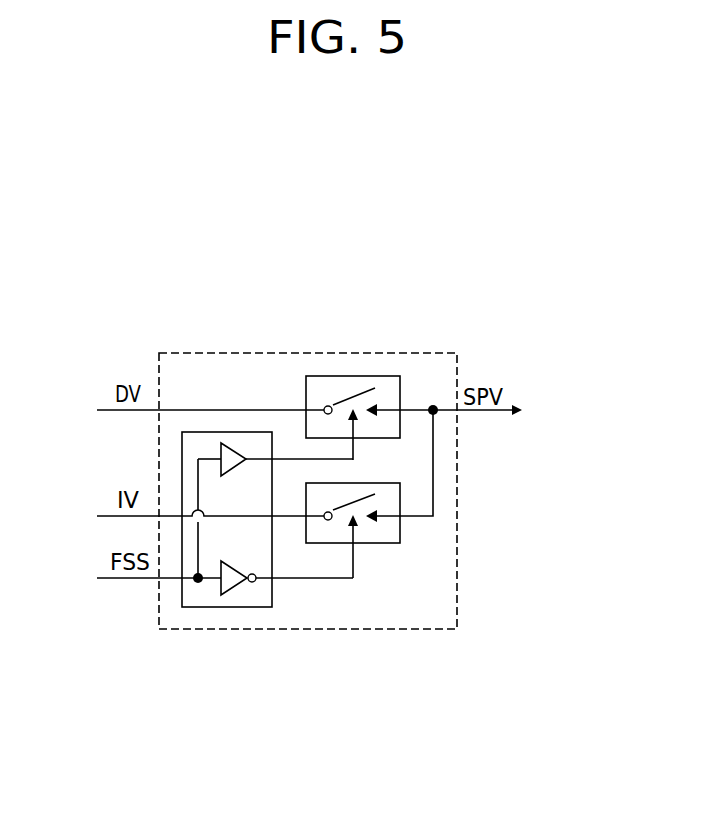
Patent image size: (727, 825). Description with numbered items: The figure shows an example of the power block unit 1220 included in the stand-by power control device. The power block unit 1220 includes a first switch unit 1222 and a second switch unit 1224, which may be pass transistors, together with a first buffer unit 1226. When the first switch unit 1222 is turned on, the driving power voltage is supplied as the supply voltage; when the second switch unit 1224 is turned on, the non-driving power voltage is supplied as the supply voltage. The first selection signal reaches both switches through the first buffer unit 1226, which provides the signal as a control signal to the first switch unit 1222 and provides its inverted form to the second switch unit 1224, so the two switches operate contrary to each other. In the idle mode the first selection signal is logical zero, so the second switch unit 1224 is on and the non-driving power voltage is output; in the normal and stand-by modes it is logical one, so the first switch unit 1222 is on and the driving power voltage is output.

The power block unit 1220 is at (316, 250).
The first switch unit 1222 is at (353, 376).
The second switch unit 1224 is at (400, 528).
The first buffer unit 1226 is at (224, 607).